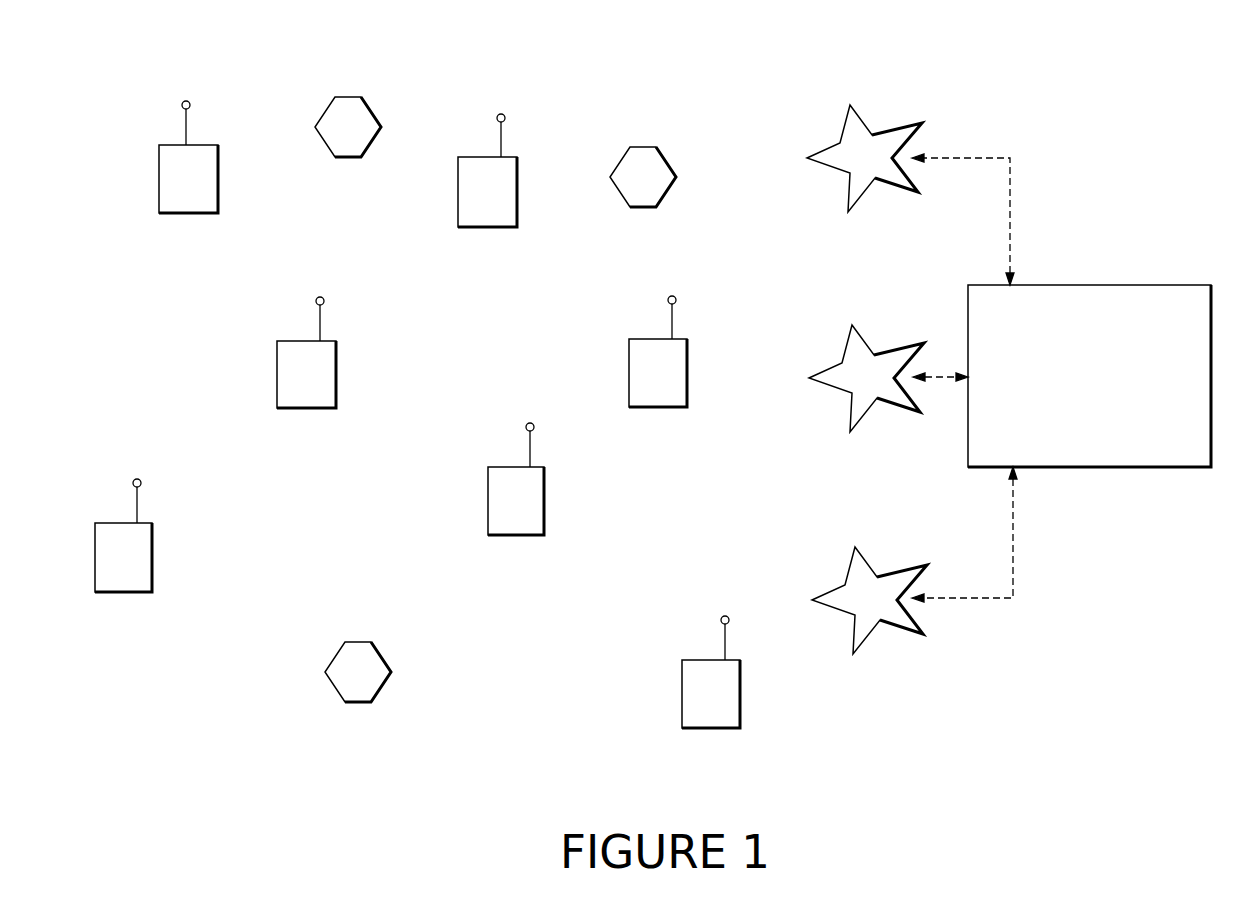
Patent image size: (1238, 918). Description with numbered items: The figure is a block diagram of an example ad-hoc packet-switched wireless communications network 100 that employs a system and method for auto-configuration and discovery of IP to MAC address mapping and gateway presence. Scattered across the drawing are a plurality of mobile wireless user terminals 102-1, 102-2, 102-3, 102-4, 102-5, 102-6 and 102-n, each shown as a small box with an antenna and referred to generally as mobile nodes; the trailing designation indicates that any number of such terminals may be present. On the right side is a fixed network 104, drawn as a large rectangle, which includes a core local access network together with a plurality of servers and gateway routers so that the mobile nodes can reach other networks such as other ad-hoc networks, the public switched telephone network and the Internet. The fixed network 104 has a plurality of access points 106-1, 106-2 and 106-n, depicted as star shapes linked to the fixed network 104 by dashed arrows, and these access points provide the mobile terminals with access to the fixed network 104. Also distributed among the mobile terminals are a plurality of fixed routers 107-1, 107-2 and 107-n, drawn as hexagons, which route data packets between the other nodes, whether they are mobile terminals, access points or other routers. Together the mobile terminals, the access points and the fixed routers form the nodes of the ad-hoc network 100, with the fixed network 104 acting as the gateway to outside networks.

The ad-hoc packet-switched wireless communications network 100 is at (1050, 94).
The mobile wireless user terminal 102-1 is at (190, 213).
The mobile wireless user terminal 102-2 is at (485, 227).
The mobile wireless user terminal 102-3 is at (305, 408).
The mobile wireless user terminal 102-4 is at (658, 407).
The mobile wireless user terminal 102-5 is at (120, 592).
The mobile wireless user terminal 102-6 is at (507, 535).
The mobile wireless user terminal 102-n is at (703, 728).
The fixed network 104 is at (1130, 467).
The access point 106-1 is at (875, 188).
The access point 106-2 is at (878, 405).
The access point 106-n is at (880, 628).
The fixed router 107-1 is at (345, 158).
The fixed router 107-2 is at (643, 207).
The fixed router 107-n is at (355, 702).